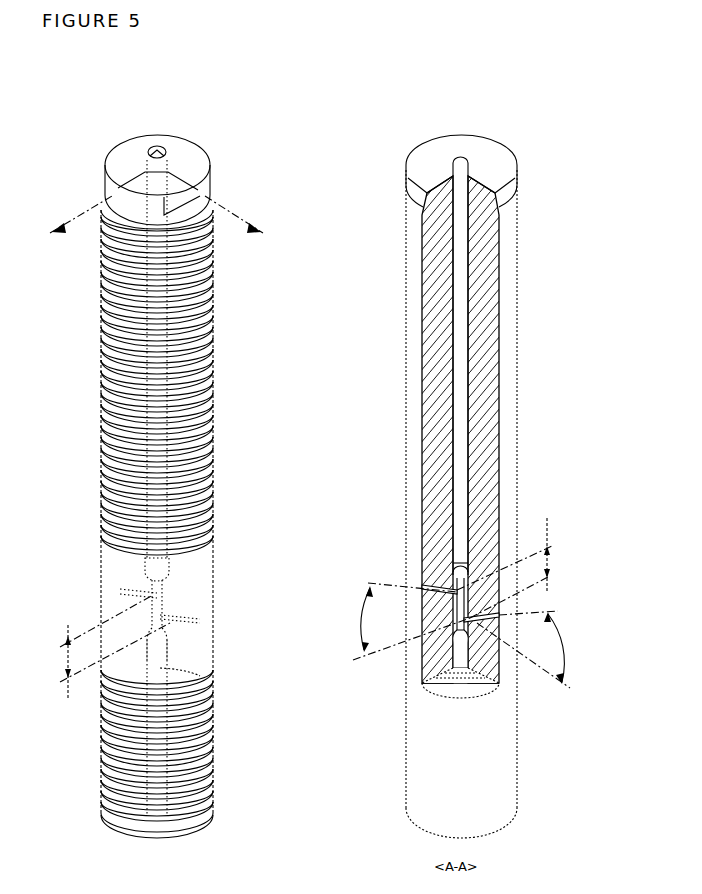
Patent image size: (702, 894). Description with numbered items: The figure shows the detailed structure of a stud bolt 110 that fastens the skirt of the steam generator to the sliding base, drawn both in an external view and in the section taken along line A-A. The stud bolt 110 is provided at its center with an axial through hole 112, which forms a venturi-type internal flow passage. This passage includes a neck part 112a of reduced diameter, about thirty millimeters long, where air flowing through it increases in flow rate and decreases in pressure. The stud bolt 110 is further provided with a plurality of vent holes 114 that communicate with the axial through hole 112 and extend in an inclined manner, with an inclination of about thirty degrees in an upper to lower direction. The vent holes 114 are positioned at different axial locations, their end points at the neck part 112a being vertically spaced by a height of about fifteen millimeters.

The stud bolt 110 is at (126, 114).
The axial through hole 112 is at (214, 688).
The neck part 112a is at (459, 622).
The vent holes 114 is at (150, 593).